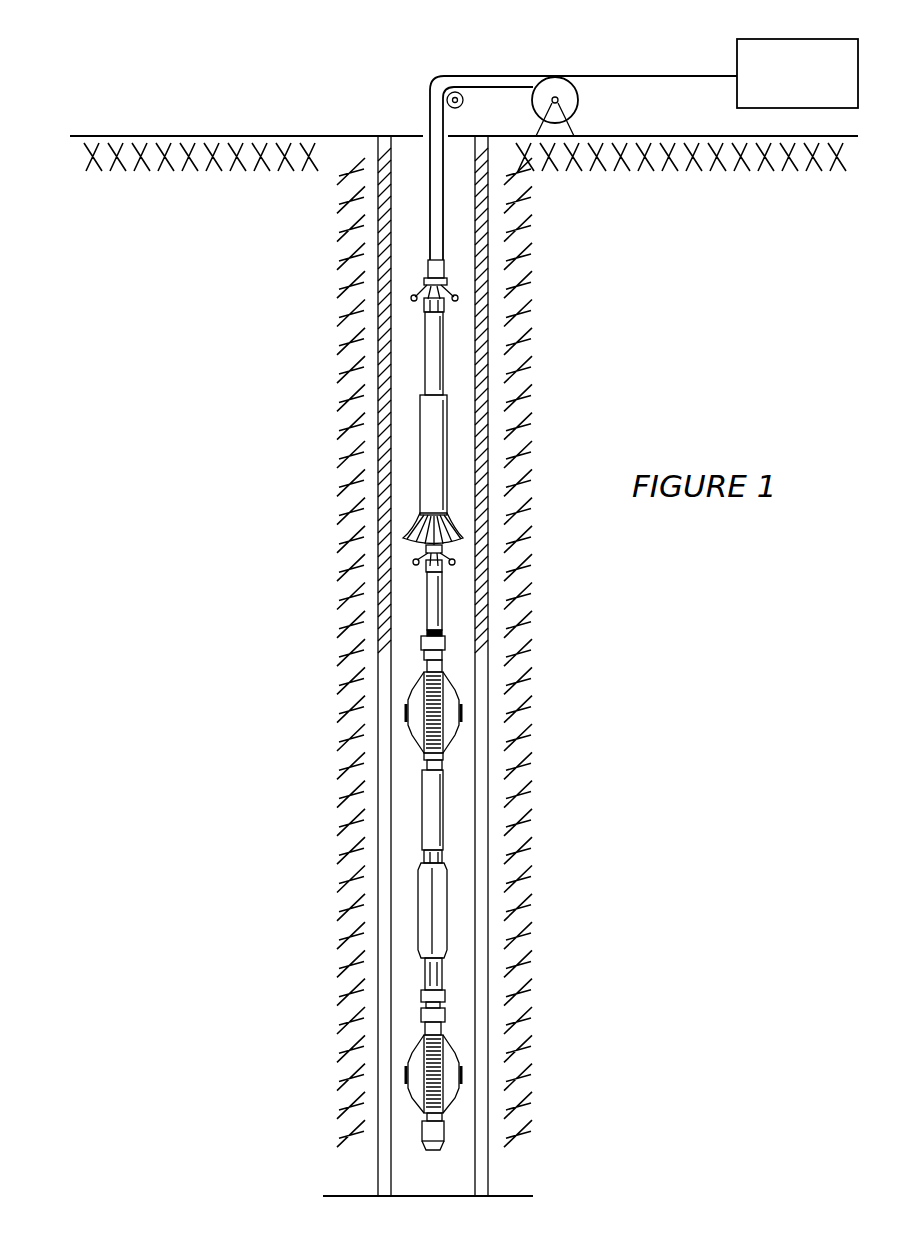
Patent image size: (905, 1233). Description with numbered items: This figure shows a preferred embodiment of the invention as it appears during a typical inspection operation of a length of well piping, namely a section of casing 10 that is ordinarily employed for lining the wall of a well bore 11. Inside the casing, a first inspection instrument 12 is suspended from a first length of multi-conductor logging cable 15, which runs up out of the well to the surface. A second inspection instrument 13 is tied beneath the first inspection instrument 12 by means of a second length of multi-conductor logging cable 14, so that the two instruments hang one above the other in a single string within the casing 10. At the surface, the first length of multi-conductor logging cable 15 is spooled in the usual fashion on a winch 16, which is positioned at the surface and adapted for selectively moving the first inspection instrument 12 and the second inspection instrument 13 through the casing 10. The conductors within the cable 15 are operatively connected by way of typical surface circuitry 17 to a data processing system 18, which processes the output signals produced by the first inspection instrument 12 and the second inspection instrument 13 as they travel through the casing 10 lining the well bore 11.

The casing 10 is at (489, 303).
The well bore 11 is at (500, 385).
The first inspection instrument 12 is at (423, 371).
The second inspection instrument 13 is at (422, 793).
The second length of multi-conductor logging cable 14 is at (443, 603).
The first length of multi-conductor logging cable 15 is at (428, 188).
The winch 16 is at (580, 102).
The surface circuitry 17 is at (623, 75).
The data processing system 18 is at (792, 39).